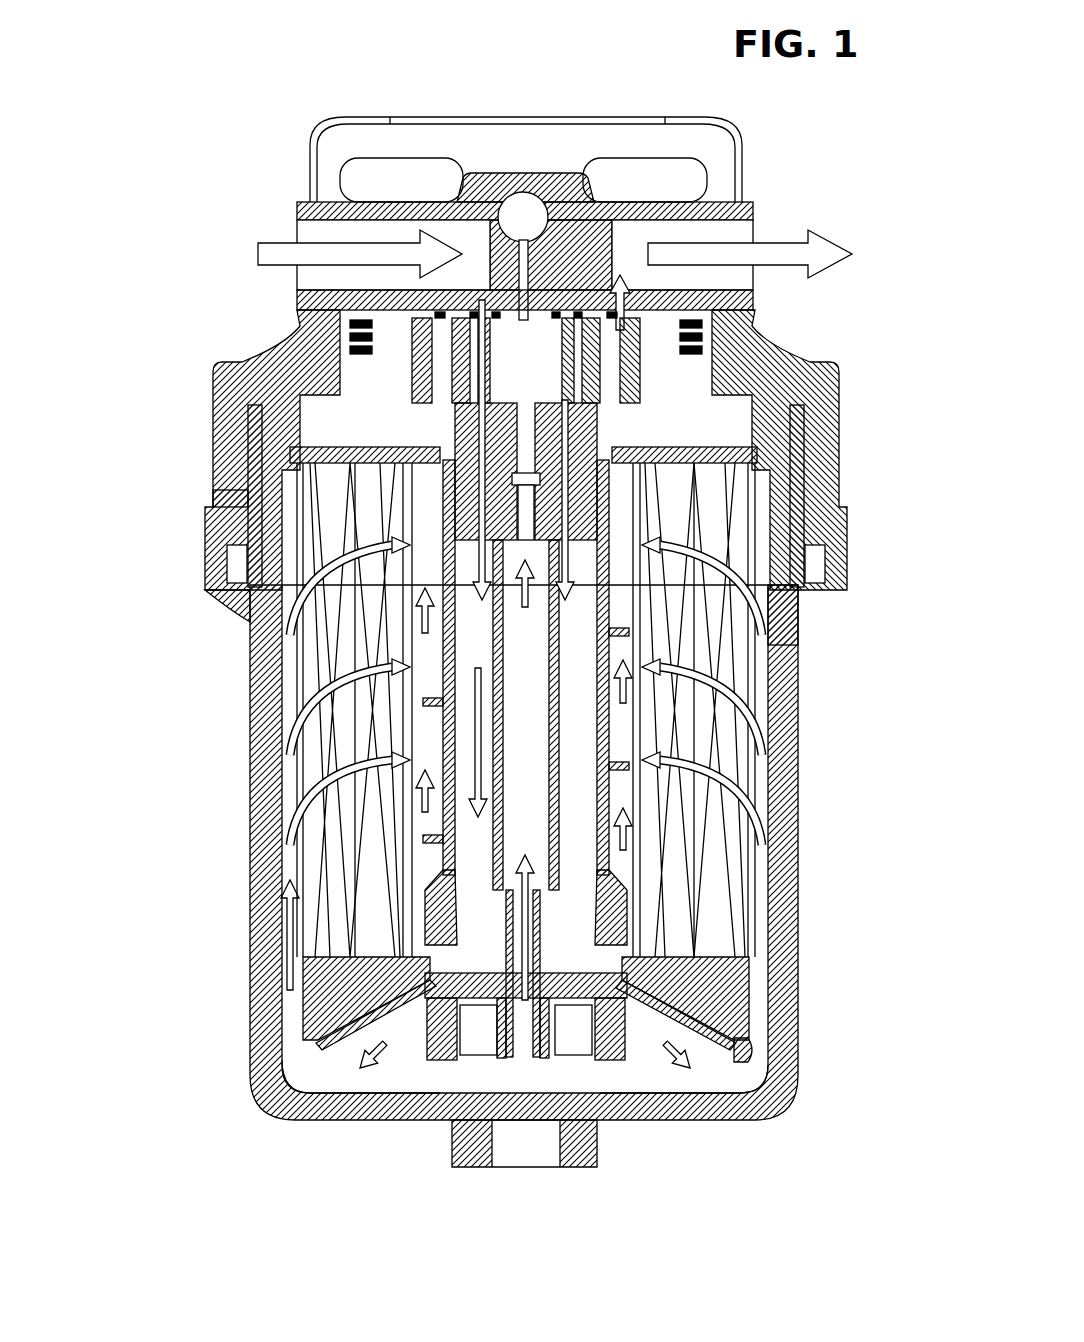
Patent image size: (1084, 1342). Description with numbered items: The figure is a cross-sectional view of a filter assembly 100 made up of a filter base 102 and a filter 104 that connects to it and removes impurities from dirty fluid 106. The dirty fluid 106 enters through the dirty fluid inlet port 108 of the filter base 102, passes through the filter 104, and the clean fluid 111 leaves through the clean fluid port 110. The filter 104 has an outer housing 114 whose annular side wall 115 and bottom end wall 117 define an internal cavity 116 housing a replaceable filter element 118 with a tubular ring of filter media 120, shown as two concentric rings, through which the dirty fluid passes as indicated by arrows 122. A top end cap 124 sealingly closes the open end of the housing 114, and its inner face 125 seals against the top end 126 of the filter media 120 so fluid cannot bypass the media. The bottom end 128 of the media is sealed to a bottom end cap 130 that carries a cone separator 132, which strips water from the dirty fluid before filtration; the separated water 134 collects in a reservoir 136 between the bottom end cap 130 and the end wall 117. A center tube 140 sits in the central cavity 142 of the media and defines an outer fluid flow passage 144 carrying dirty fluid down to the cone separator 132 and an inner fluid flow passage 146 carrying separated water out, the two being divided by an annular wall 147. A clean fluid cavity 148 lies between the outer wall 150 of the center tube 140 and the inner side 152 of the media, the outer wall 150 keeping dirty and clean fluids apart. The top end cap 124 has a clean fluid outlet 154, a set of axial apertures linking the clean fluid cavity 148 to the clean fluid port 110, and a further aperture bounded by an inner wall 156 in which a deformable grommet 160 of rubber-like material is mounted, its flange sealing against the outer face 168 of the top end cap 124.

The filter assembly 100 is at (152, 146).
The filter base 102 is at (300, 328).
The filter 104 is at (145, 762).
The dirty fluid 106 is at (262, 250).
The dirty fluid inlet port 108 is at (300, 222).
The clean fluid port 110 is at (742, 235).
The clean fluid 111 is at (825, 242).
The outer housing 114 is at (275, 960).
The annular side wall 115 is at (297, 731).
The internal cavity 116 is at (290, 797).
The bottom end wall 117 is at (650, 1122).
The replaceable filter element 118 is at (280, 648).
The tubular ring of filter media 120 is at (310, 842).
The arrows 122 is at (800, 527).
The top end cap 124 is at (275, 430).
The inner face 125 is at (255, 510).
The top end 126 is at (290, 383).
The bottom end 128 is at (305, 1000).
The bottom end cap 130 is at (292, 1043).
The cone separator 132 is at (735, 1075).
The separated water 134 is at (332, 1112).
The reservoir 136 is at (274, 1100).
The center tube 140 is at (645, 745).
The central cavity 142 is at (640, 862).
The outer fluid flow passage 144 is at (735, 893).
The inner fluid flow passage 146 is at (725, 840).
The annular wall 147 is at (660, 695).
The clean fluid cavity 148 is at (630, 652).
The outer wall 150 is at (618, 728).
The inner side 152 is at (660, 790).
The clean fluid outlet 154 is at (240, 580).
The inner wall 156 is at (748, 545).
The deformable grommet 160 is at (745, 318).
The outer face 168 is at (838, 388).